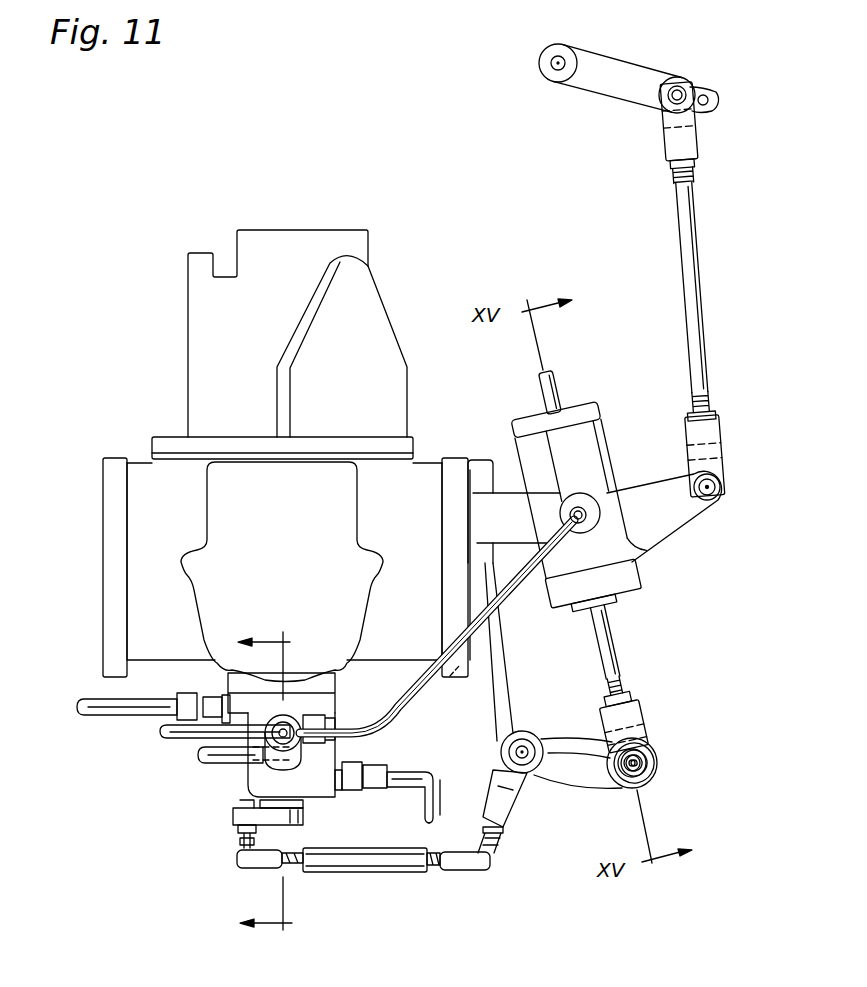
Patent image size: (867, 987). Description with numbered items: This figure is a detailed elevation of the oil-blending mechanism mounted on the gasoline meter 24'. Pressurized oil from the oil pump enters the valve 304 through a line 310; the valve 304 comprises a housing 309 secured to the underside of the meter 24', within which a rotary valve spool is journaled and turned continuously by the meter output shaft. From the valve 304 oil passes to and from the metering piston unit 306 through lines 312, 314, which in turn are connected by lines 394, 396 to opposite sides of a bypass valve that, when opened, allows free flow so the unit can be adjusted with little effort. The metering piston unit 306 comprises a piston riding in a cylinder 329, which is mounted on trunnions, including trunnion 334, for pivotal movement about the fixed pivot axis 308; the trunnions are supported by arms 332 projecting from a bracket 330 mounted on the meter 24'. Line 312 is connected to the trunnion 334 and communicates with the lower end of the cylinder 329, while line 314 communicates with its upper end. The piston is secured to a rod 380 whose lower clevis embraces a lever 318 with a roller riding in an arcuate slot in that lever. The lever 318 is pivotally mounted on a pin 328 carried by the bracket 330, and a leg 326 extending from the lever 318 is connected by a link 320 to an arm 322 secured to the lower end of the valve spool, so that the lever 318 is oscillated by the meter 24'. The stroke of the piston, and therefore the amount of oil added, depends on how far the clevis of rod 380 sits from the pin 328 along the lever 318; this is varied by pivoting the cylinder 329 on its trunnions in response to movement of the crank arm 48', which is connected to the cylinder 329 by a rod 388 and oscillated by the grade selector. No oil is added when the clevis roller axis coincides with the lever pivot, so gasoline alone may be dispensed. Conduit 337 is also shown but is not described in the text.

The meter 24' is at (278, 584).
The crank arm 48' is at (629, 75).
The rod 388 is at (703, 293).
The arms 332 is at (585, 487).
The trunnion 334 is at (572, 507).
The fixed pivot point 308 is at (558, 523).
The cylinder 329 is at (638, 575).
The metering piston unit 306 is at (697, 598).
The bracket 330 is at (507, 650).
The rod 380 is at (615, 643).
The pin 328 is at (525, 742).
The lever 318 is at (584, 790).
The leg 326 is at (520, 817).
The line 314 is at (437, 652).
The housing 309 is at (350, 712).
The line 312 is at (428, 703).
The line 310 is at (413, 773).
The link 320 is at (372, 875).
The conduit 337 is at (90, 700).
The line 396 is at (170, 738).
The line 394 is at (205, 762).
The valve 304 is at (202, 800).
The arm 322 is at (228, 820).